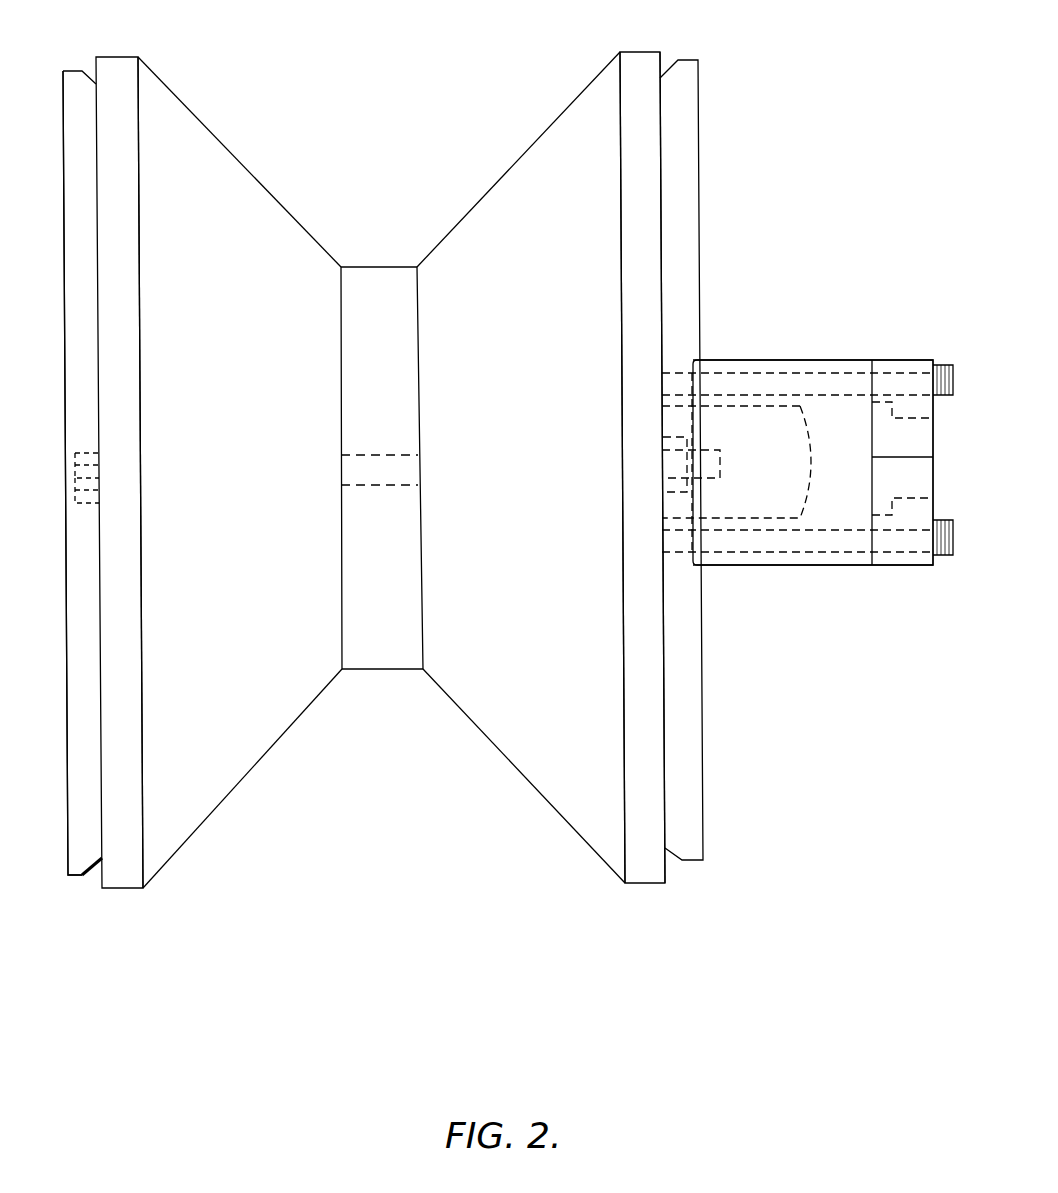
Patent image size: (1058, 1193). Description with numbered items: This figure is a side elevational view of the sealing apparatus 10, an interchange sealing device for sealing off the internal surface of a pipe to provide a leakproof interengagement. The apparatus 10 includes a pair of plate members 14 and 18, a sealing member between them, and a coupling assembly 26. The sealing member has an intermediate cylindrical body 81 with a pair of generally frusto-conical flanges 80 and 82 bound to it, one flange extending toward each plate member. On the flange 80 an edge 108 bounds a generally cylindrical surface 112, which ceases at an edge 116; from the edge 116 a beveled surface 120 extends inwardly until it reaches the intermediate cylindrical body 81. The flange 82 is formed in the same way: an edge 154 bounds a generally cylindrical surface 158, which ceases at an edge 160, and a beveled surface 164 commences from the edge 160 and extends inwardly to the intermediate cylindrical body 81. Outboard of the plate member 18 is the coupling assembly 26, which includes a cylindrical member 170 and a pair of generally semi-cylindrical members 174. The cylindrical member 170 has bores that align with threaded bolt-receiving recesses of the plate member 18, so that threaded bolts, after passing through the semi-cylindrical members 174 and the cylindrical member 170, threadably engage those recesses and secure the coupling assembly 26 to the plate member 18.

The apparatus 10 is at (424, 148).
The plate member 14 is at (82, 94).
The plate member 18 is at (683, 232).
The coupling assembly 26 is at (780, 356).
The flange 80 is at (230, 820).
The intermediate cylindrical body 81 is at (378, 674).
The flange 82 is at (556, 819).
The edge 108 is at (108, 888).
The cylindrical surface 112 is at (120, 888).
The edge 116 is at (143, 888).
The beveled surface 120 is at (250, 529).
The edge 154 is at (667, 884).
The cylindrical surface 158 is at (644, 66).
The edge 160 is at (625, 884).
The beveled surface 164 is at (542, 526).
The cylindrical member 170 is at (786, 572).
The semi-cylindrical member 174 is at (900, 356).